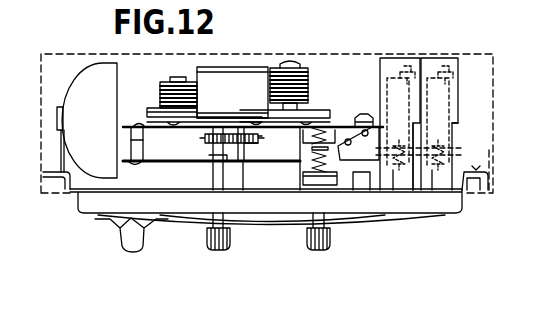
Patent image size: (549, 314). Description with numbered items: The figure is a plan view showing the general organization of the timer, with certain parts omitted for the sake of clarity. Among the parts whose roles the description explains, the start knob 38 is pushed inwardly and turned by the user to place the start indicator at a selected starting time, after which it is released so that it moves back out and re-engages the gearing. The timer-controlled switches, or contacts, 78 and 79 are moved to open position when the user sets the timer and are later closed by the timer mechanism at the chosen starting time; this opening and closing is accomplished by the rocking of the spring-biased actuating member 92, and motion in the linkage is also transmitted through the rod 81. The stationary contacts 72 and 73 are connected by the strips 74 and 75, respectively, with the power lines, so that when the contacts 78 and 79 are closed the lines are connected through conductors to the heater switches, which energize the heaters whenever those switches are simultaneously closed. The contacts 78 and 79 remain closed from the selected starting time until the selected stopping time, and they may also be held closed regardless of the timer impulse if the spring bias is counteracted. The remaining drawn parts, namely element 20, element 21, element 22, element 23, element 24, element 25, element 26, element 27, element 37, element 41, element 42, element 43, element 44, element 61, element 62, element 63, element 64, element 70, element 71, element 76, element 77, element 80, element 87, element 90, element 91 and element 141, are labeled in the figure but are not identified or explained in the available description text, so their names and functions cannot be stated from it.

The chassis frame 20 is at (147, 190).
The support post 21 is at (135, 124).
The lever 22 is at (343, 125).
The lower shelf 23 is at (160, 163).
The post bracket 24 is at (143, 148).
The frame member 25 is at (296, 172).
The base plate 26 is at (80, 207).
The curved pan 27 is at (271, 222).
The foot 37 is at (207, 238).
The start knob 38 is at (331, 238).
The fin bracket 41 is at (124, 240).
The enclosure 42 is at (494, 70).
The motor housing 43 is at (233, 80).
The lamination stack 44 is at (149, 108).
The shaft post 61 is at (220, 170).
The worm gear 62 is at (204, 138).
The gear shaft 63 is at (250, 141).
The gear end 64 is at (272, 134).
The switch housing 70 is at (392, 62).
The switch housing 71 is at (430, 62).
The stationary contact 72 is at (387, 179).
The stationary contact 73 is at (424, 179).
The strip 74 is at (392, 109).
The strip 75 is at (437, 98).
The contact cap 76 is at (408, 70).
The contact cap 77 is at (445, 70).
The timer controlled switch 78 is at (393, 190).
The timer controlled switch 79 is at (433, 190).
The contact spring 80 is at (402, 145).
The rod 81 is at (440, 138).
The connecting bar 87 is at (458, 148).
The partition 90 is at (414, 128).
The housing tab 91 is at (458, 124).
The actuating member 92 is at (375, 150).
The lens 141 is at (87, 120).